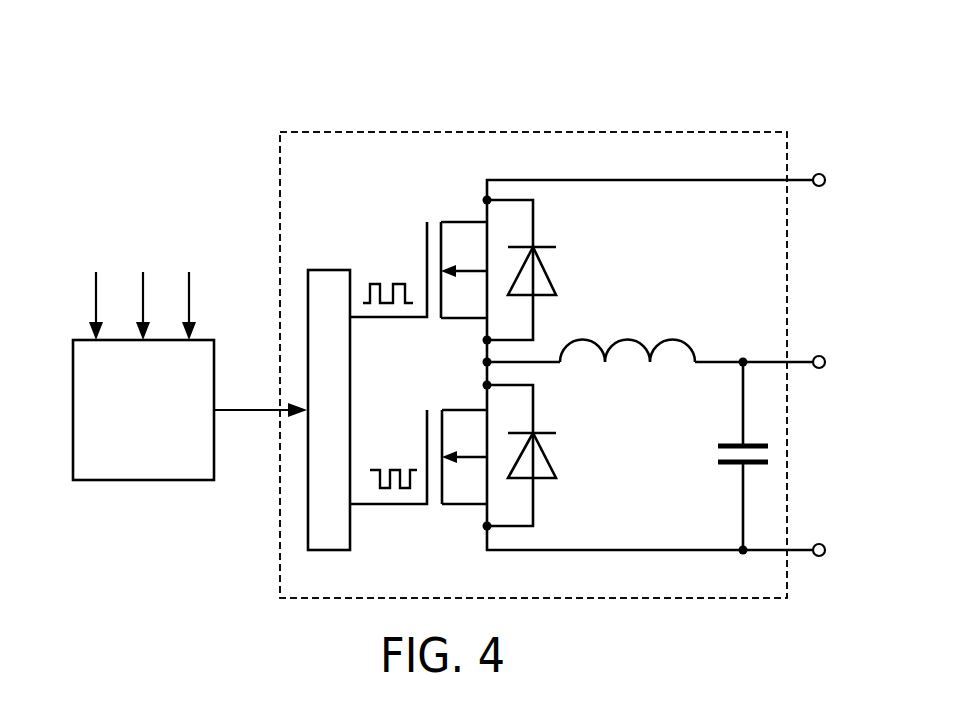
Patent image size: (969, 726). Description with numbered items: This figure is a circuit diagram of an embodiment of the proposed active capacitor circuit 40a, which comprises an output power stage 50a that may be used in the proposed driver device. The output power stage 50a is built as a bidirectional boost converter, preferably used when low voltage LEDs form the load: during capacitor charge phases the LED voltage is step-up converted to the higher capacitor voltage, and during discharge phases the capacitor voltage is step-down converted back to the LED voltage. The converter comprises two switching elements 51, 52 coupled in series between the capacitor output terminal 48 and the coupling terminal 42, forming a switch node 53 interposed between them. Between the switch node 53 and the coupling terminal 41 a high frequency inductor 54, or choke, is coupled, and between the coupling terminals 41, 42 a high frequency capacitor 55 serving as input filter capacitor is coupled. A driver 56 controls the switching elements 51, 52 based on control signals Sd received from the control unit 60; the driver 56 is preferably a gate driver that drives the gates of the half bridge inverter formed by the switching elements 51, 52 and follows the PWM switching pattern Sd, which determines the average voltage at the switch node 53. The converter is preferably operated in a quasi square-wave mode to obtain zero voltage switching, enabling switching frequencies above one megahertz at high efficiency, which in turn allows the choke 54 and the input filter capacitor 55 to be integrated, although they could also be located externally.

The active capacitor circuit 40a is at (745, 88).
The output power stage 50a is at (386, 132).
The driver 56 is at (337, 270).
The switching element 51 is at (577, 235).
The switching element 52 is at (575, 473).
The switch node 53 is at (482, 362).
The high frequency inductor 54 is at (646, 340).
The high frequency capacitor 55 is at (728, 444).
The capacitor output terminal 48 is at (818, 173).
The coupling terminal 41 is at (818, 356).
The coupling terminal 42 is at (818, 544).
The control unit 60 is at (140, 483).